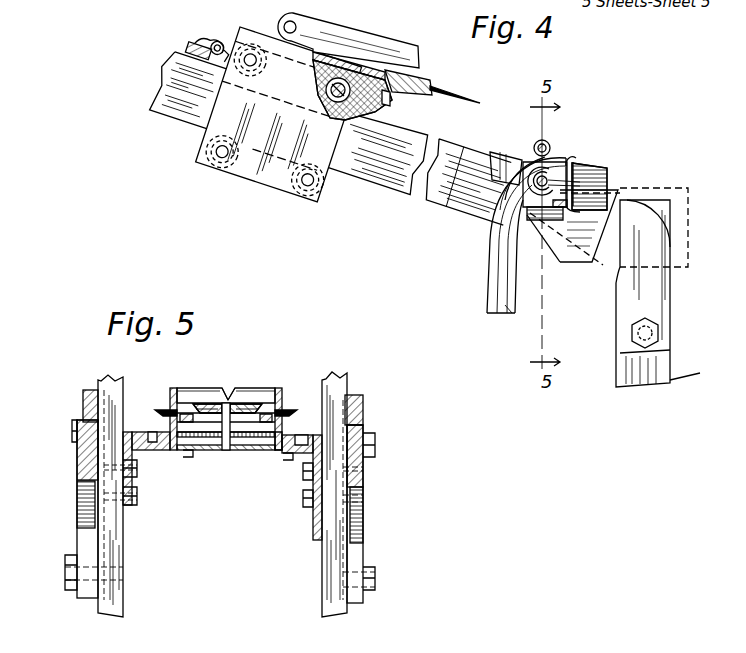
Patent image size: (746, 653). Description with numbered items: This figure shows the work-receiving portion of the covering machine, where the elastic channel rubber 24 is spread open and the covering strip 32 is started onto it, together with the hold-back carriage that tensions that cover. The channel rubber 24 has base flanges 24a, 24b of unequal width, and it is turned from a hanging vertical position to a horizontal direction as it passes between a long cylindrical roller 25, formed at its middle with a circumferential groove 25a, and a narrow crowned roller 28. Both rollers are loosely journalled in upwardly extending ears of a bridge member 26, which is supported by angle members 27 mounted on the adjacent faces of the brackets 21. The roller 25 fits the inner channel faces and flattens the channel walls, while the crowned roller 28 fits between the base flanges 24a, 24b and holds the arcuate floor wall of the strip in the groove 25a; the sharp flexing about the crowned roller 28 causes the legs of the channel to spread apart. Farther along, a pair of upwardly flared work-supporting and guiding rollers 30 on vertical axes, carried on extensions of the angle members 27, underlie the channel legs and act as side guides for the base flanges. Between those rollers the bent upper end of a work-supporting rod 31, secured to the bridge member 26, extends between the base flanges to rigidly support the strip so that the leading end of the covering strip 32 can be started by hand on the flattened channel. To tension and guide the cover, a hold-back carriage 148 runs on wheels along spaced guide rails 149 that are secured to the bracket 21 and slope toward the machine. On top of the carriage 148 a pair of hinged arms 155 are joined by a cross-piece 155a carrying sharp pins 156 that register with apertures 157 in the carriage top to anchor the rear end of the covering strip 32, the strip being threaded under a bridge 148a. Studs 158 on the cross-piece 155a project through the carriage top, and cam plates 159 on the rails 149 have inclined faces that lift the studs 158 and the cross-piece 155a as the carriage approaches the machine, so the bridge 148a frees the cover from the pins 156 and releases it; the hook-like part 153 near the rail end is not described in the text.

In FIG. 4, the bracket 21 is at (657, 380).
In FIG. 5, the bracket 21 is at (115, 553).
In FIG. 4, the channel rubber 24 is at (497, 300).
In FIG. 5, the channel rubber 24 is at (240, 400).
In FIG. 5, the base flange 24a is at (215, 410).
In FIG. 4, the base flange 24b is at (514, 314).
In FIG. 5, the base flange 24b is at (240, 412).
In FIG. 4, the roller 25 is at (535, 148).
In FIG. 5, the roller 25 is at (195, 388).
In FIG. 5, the circumferential groove 25a is at (226, 392).
In FIG. 4, the bridge member 26 is at (548, 150).
In FIG. 5, the bridge member 26 is at (278, 440).
In FIG. 4, the angle member 27 is at (593, 267).
In FIG. 5, the angle member 27 is at (132, 453).
In FIG. 4, the crowned roller 28 is at (607, 173).
In FIG. 5, the crowned roller 28 is at (226, 420).
In FIG. 4, the work-supporting and guiding roller 30 is at (602, 170).
In FIG. 5, the work-supporting and guiding roller 30 is at (162, 412).
In FIG. 4, the work-supporting rod 31 is at (578, 165).
In FIG. 4, the covering strip 32 is at (477, 101).
In FIG. 4, the hold-back carriage 148 is at (263, 175).
In FIG. 4, the bridge 148a is at (430, 83).
In FIG. 4, the guide rail 149 is at (392, 195).
In FIG. 5, the guide rail 149 is at (80, 461).
In FIG. 4, the hook 153 is at (200, 48).
In FIG. 4, the hinged arm 155 is at (310, 33).
In FIG. 4, the cross-piece 155a is at (390, 67).
In FIG. 4, the pin 156 is at (397, 78).
In FIG. 4, the aperture 157 is at (385, 97).
In FIG. 4, the stud 158 is at (368, 128).
In FIG. 4, the cam plate 159 is at (510, 153).
In FIG. 5, the cam plate 159 is at (83, 394).